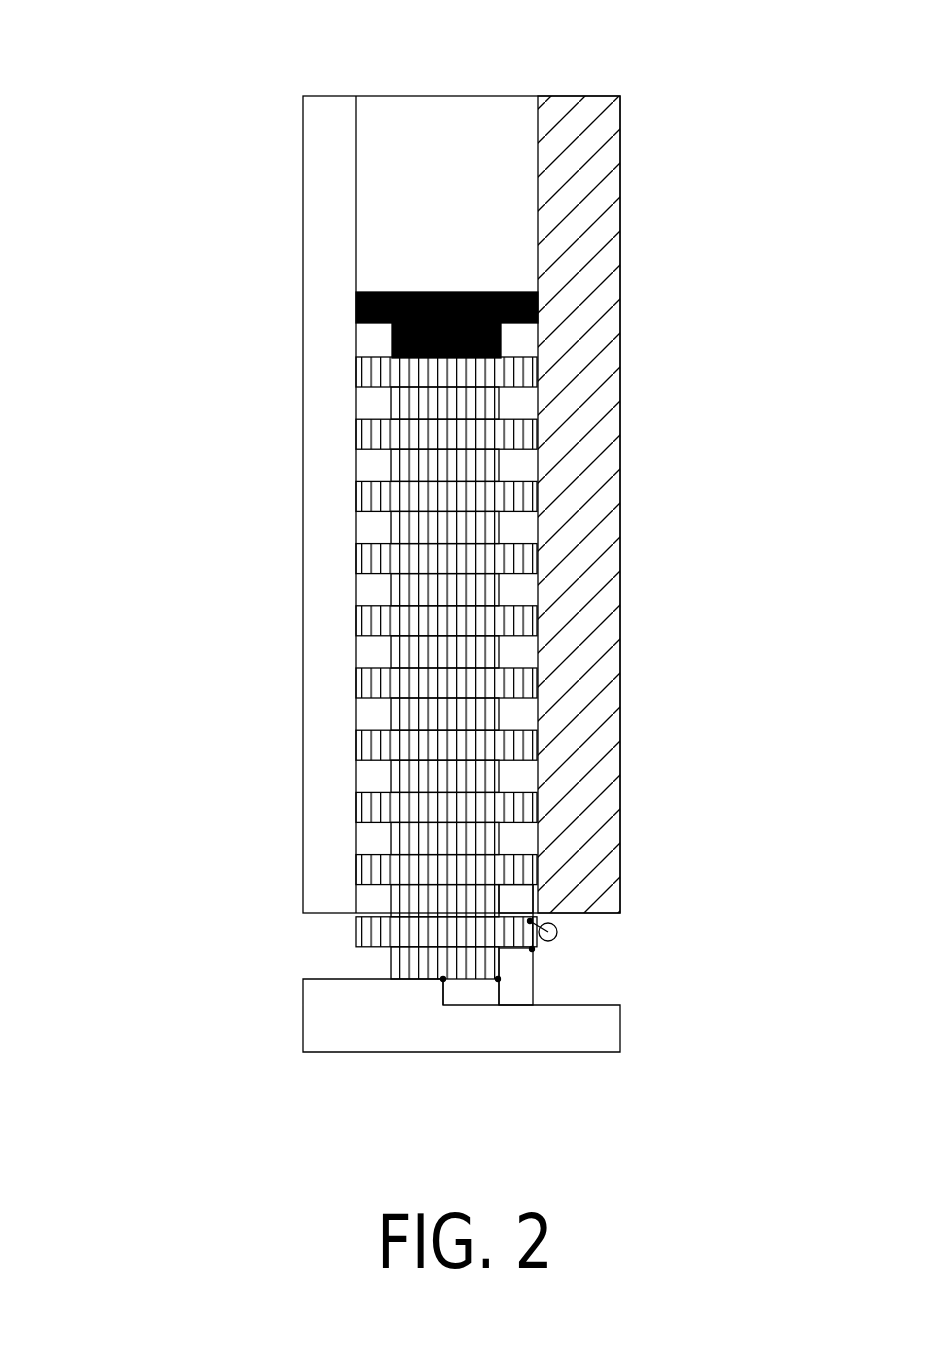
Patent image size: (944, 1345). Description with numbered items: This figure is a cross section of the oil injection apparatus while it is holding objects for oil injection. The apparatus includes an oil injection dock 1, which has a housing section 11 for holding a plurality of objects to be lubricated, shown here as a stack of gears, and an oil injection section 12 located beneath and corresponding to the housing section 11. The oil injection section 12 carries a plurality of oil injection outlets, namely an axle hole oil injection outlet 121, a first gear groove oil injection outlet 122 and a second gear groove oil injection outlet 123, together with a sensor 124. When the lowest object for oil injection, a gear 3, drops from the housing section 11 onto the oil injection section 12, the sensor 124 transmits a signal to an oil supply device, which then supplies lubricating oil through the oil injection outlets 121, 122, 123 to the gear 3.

The oil injection dock 1 is at (243, 137).
The housing section 11 is at (373, 242).
The gear 3 is at (366, 866).
The oil injection section 12 is at (597, 977).
The axle hole oil injection outlet 121 is at (443, 979).
The first gear groove oil injection outlet 122 is at (498, 979).
The second gear groove oil injection outlet 123 is at (532, 949).
The sensor 124 is at (548, 932).